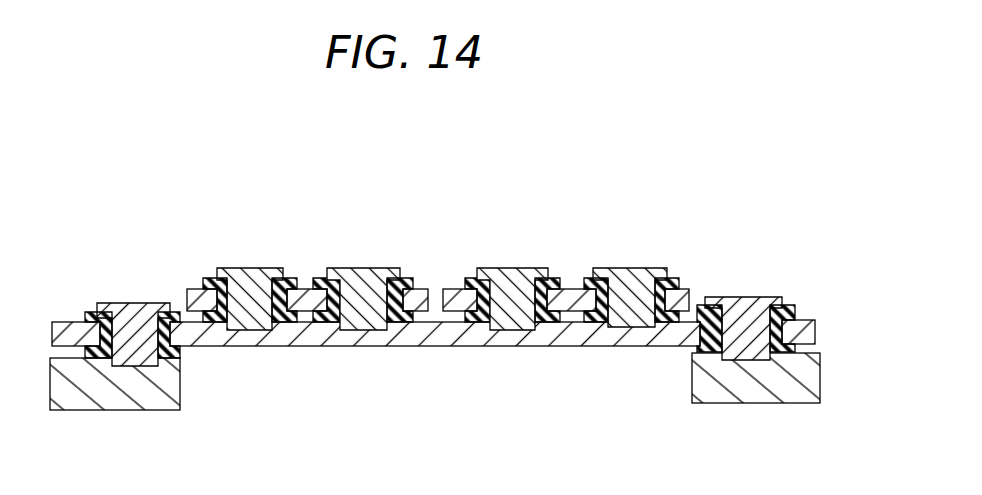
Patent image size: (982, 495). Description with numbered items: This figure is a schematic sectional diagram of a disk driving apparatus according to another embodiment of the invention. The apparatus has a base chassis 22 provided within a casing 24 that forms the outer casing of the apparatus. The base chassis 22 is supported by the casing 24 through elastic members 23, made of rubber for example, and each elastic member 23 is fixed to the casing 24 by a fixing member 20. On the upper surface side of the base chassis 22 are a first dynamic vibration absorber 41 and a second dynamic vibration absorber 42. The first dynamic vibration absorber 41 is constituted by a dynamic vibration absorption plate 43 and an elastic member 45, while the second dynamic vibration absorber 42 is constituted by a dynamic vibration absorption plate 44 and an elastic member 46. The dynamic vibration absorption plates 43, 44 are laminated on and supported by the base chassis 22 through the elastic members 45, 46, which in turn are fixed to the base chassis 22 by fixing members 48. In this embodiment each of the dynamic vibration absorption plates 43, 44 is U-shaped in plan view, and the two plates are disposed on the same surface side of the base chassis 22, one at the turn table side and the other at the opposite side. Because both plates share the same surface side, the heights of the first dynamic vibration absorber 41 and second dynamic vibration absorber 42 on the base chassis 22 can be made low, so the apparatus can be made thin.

The fixing member 20 is at (752, 307).
The base chassis 22 is at (429, 338).
The elastic member 23 is at (790, 308).
The casing 24 is at (797, 390).
The first dynamic vibration absorber 41 is at (200, 270).
The second dynamic vibration absorber 42 is at (680, 262).
The dynamic vibration absorption plate 43 is at (200, 288).
The dynamic vibration absorption plate 44 is at (688, 280).
The elastic member 45 is at (317, 278).
The elastic member 46 is at (585, 278).
The fixing member 48 is at (372, 275).